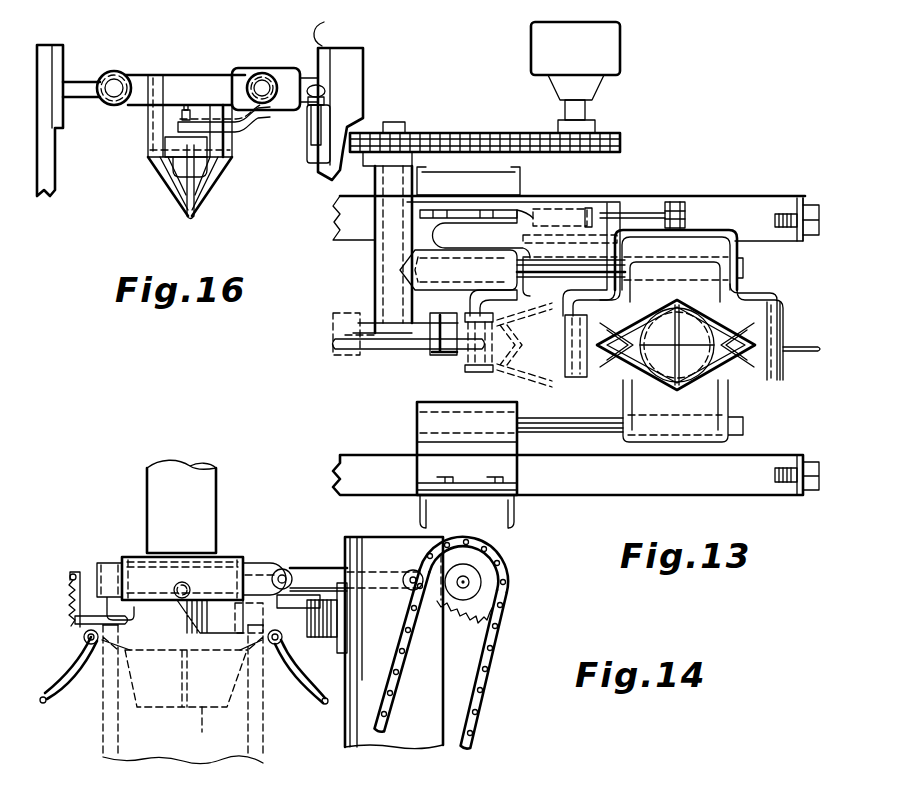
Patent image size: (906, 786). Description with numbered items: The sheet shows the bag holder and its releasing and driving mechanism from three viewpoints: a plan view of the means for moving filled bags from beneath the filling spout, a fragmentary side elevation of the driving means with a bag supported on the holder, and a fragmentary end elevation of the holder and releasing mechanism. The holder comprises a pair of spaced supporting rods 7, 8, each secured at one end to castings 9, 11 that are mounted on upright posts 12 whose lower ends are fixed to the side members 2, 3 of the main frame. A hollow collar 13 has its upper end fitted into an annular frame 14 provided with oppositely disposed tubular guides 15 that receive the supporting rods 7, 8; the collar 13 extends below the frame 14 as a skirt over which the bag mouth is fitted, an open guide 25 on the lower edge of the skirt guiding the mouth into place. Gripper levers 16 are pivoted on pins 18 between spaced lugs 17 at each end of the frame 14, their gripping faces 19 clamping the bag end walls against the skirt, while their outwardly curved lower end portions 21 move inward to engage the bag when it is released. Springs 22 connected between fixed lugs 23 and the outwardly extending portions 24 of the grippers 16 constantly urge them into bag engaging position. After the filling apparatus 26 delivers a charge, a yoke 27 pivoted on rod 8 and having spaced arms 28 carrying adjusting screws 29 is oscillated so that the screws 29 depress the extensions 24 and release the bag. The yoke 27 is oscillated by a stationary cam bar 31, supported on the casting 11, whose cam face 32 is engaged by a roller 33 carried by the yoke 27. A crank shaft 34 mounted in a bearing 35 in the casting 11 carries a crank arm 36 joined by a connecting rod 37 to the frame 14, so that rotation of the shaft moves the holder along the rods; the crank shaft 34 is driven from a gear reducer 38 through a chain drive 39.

In FIG. 13, the side member 2 is at (620, 488).
In FIG. 13, the side member 3 is at (760, 208).
In FIG. 16, the supporting rod 7 is at (114, 86).
In FIG. 13, the supporting rod 7 is at (585, 426).
In FIG. 16, the supporting rod 8 is at (262, 87).
In FIG. 13, the supporting rod 8 is at (597, 262).
In FIG. 16, the casting 9 is at (60, 53).
In FIG. 13, the casting 9 is at (417, 404).
In FIG. 16, the casting 11 is at (333, 27).
In FIG. 13, the casting 11 is at (470, 251).
In FIG. 16, the upright post 12 is at (355, 52).
In FIG. 13, the upright post 12 is at (515, 176).
In FIG. 14, the upright post 12 is at (432, 691).
In FIG. 16, the collar 13 is at (148, 120).
In FIG. 13, the collar 13 is at (725, 326).
In FIG. 14, the collar 13 is at (147, 652).
In FIG. 16, the annular frame 14 is at (153, 76).
In FIG. 13, the annular frame 14 is at (493, 382).
In FIG. 14, the annular frame 14 is at (265, 570).
In FIG. 13, the tubular guide 15 is at (692, 265).
In FIG. 16, the gripper lever 16 is at (172, 145).
In FIG. 14, the gripper lever 16 is at (68, 675).
In FIG. 13, the lug 17 is at (562, 315).
In FIG. 14, the lug 17 is at (285, 570).
In FIG. 14, the pin 18 is at (84, 642).
In FIG. 14, the gripping face 19 is at (118, 632).
In FIG. 16, the lower end portion 21 is at (195, 192).
In FIG. 14, the lower end portion 21 is at (61, 703).
In FIG. 14, the spring 22 is at (68, 594).
In FIG. 14, the fixed lug 23 is at (73, 574).
In FIG. 14, the outwardly extending portion 24 is at (76, 628).
In FIG. 16, the open guide 25 is at (172, 192).
In FIG. 13, the open guide 25 is at (733, 360).
In FIG. 14, the open guide 25 is at (202, 727).
In FIG. 13, the filling apparatus 26 is at (705, 378).
In FIG. 14, the filling apparatus 26 is at (205, 493).
In FIG. 16, the yoke 27 is at (289, 75).
In FIG. 13, the yoke 27 is at (752, 254).
In FIG. 14, the yoke 27 is at (218, 578).
In FIG. 16, the arm 28 is at (198, 122).
In FIG. 13, the arm 28 is at (560, 300).
In FIG. 16, the adjusting screw 29 is at (185, 106).
In FIG. 14, the adjusting screw 29 is at (97, 570).
In FIG. 16, the cam bar 31 is at (322, 127).
In FIG. 13, the cam bar 31 is at (635, 214).
In FIG. 13, the cam face 32 is at (587, 208).
In FIG. 14, the cam face 32 is at (330, 600).
In FIG. 16, the roller 33 is at (332, 92).
In FIG. 13, the roller 33 is at (688, 210).
In FIG. 14, the roller 33 is at (181, 583).
In FIG. 13, the crank shaft 34 is at (390, 190).
In FIG. 14, the crank shaft 34 is at (470, 582).
In FIG. 13, the bearing 35 is at (378, 263).
In FIG. 13, the crank arm 36 is at (422, 333).
In FIG. 14, the crank arm 36 is at (425, 552).
In FIG. 13, the connecting rod 37 is at (465, 342).
In FIG. 14, the connecting rod 37 is at (300, 594).
In FIG. 13, the gear reducer 38 is at (612, 45).
In FIG. 13, the chain drive 39 is at (477, 133).
In FIG. 14, the chain drive 39 is at (498, 653).